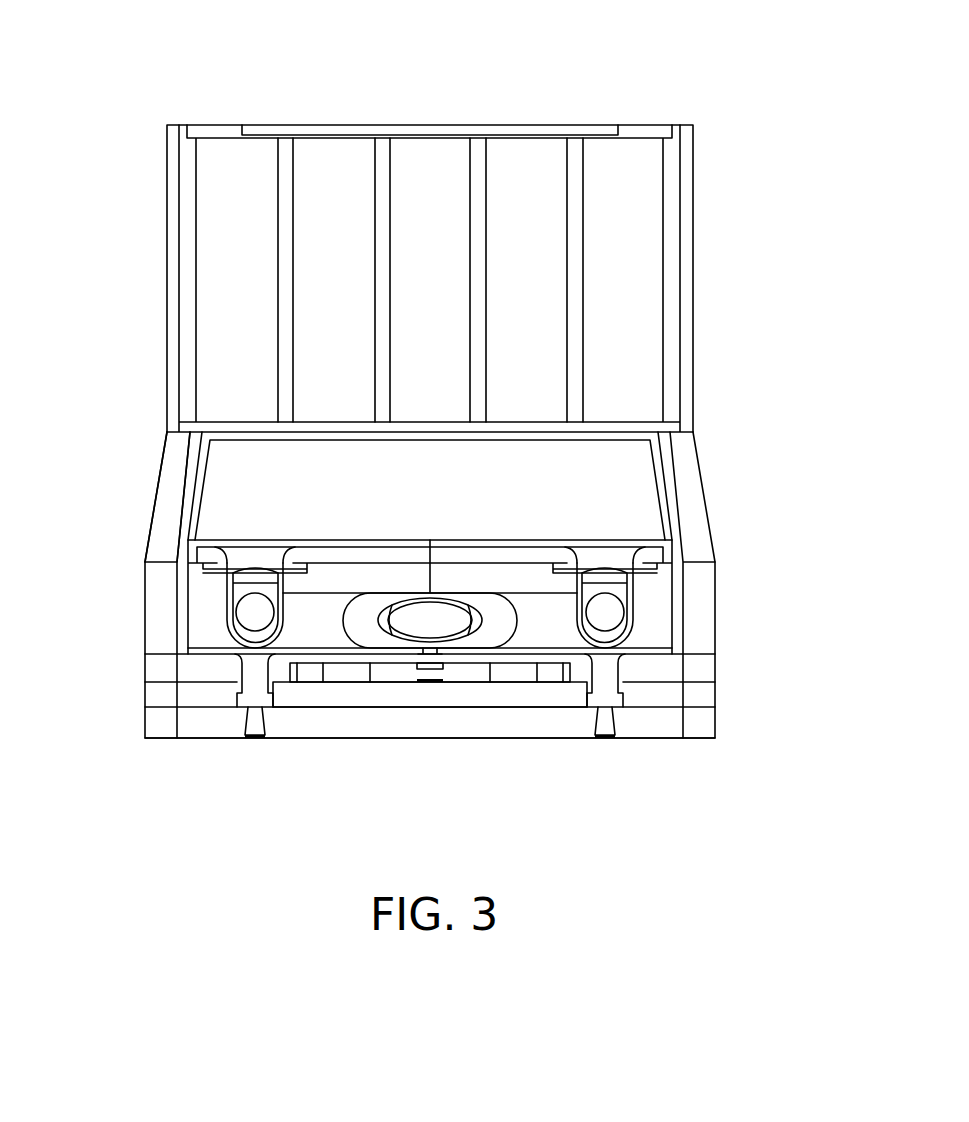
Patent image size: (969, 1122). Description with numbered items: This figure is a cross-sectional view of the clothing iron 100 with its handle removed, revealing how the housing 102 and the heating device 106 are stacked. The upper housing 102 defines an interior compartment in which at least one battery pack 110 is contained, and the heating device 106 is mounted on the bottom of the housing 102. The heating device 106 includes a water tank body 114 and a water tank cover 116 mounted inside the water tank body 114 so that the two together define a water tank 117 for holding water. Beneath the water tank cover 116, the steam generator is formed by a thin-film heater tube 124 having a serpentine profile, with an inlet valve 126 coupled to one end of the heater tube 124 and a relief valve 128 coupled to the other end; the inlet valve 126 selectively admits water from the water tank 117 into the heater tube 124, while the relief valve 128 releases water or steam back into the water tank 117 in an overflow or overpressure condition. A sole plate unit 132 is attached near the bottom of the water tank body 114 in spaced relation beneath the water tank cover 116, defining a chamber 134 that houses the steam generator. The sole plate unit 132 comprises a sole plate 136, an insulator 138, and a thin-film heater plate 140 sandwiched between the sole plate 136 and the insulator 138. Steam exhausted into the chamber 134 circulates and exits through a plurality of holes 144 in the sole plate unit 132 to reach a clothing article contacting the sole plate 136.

The clothing iron 100 is at (158, 76).
The housing 102 is at (693, 192).
The battery pack 110 is at (531, 170).
The water tank 117 is at (408, 478).
The heating device 106 is at (734, 591).
The water tank body 114 is at (162, 463).
The water tank cover 116 is at (545, 538).
The relief valve 128 is at (252, 566).
The inlet valve 126 is at (607, 563).
The thin-film heater tube 124 is at (498, 625).
The chamber 134 is at (213, 619).
The sole plate unit 132 is at (736, 713).
The holes 144 is at (237, 694).
The sole plate 136 is at (648, 722).
The insulator 138 is at (668, 665).
The thin-film heater plate 140 is at (655, 693).